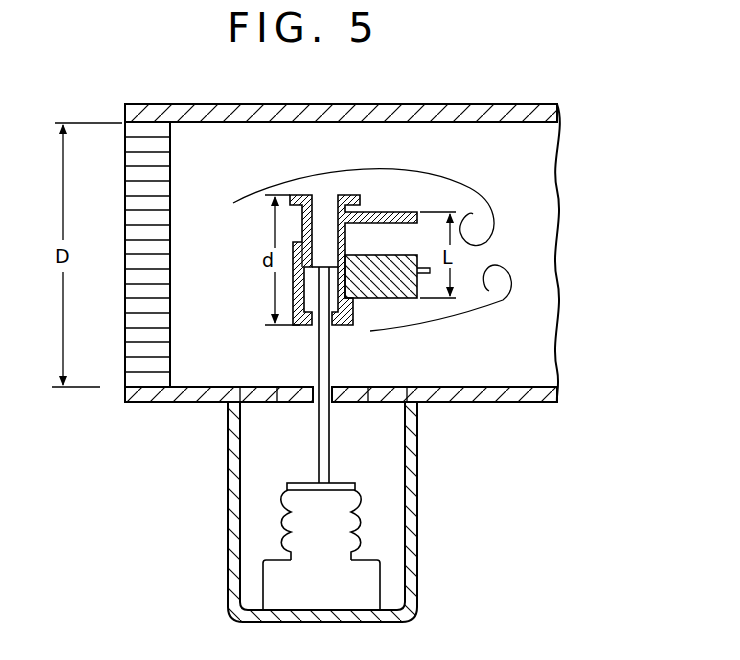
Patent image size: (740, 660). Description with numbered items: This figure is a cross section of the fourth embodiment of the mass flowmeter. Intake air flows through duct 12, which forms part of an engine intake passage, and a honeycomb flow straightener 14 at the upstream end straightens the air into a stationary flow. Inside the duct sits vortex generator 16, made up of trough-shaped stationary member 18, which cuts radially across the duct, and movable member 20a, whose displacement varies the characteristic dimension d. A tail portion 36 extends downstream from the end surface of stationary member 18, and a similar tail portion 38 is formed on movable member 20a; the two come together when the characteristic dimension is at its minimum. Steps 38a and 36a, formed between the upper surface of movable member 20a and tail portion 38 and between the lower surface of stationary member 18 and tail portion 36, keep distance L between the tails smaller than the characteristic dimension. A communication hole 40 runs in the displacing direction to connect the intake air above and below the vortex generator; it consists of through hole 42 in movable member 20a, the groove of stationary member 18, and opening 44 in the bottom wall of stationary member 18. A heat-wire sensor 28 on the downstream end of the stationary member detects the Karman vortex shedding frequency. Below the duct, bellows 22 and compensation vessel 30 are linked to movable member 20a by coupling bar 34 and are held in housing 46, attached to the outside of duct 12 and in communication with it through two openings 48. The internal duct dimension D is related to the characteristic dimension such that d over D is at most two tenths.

The duct 12 is at (197, 104).
The flow straightener 14 is at (125, 273).
The vortex generator 16 is at (250, 305).
The stationary member 18 is at (295, 327).
The movable member 20a is at (296, 195).
The bellows 22 is at (355, 516).
The sensor 28 is at (426, 271).
The compensation vessel 30 is at (380, 590).
The coupling bar 34 is at (330, 462).
The tail portion 36 is at (392, 298).
The step 36a is at (352, 326).
The tail portion 38 is at (406, 212).
The step 38a is at (362, 202).
The communication hole 40 is at (309, 318).
The through hole 42 is at (325, 203).
The opening 44 is at (335, 318).
The housing 46 is at (418, 480).
The openings 48 is at (266, 403).